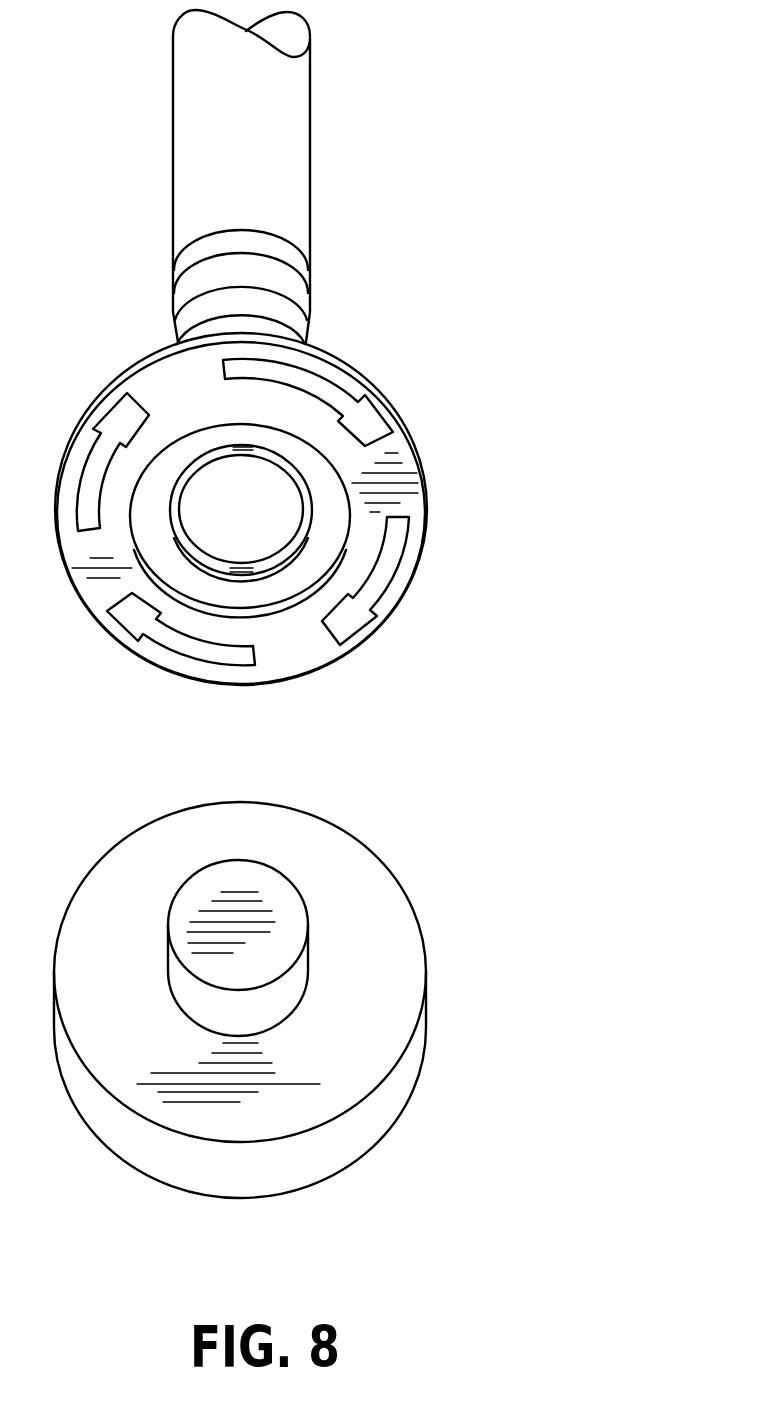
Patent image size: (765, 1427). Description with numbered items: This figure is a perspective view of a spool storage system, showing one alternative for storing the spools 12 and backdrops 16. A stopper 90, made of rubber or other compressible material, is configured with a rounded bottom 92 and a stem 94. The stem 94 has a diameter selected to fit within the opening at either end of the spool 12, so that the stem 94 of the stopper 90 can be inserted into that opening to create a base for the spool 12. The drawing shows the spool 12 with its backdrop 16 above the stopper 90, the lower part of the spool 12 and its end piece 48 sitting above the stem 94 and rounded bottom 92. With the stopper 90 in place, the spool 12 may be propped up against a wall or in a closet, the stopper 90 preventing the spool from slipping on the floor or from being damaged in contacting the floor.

The spool 12 is at (480, 133).
The backdrop 16 is at (355, 98).
The locking disc with arcuate slots 48 is at (453, 438).
The stopper 90 is at (463, 892).
The rounded bottom 92 is at (273, 1192).
The stem 94 is at (275, 898).